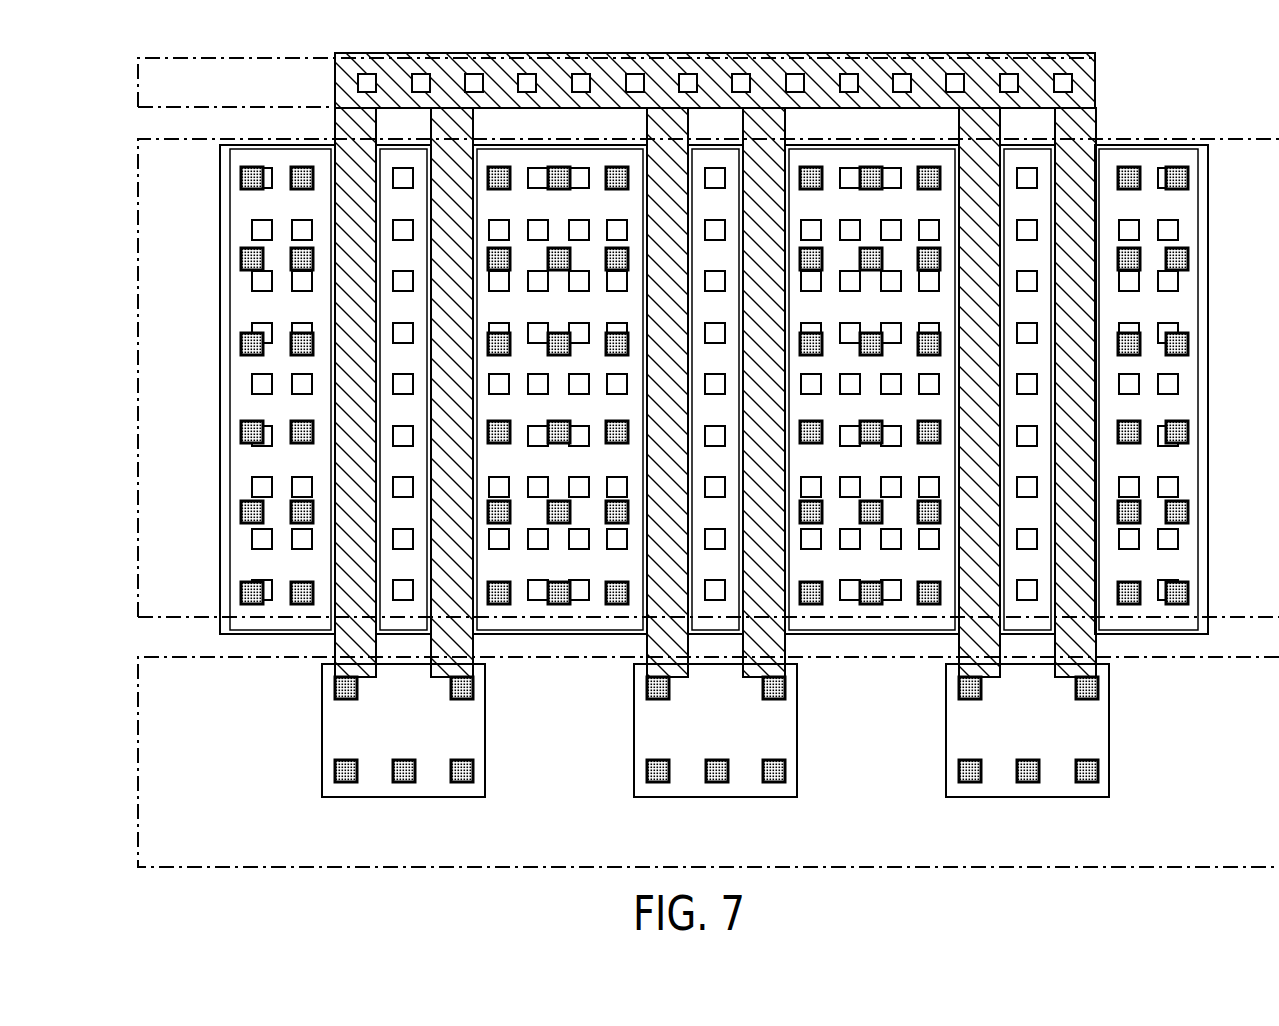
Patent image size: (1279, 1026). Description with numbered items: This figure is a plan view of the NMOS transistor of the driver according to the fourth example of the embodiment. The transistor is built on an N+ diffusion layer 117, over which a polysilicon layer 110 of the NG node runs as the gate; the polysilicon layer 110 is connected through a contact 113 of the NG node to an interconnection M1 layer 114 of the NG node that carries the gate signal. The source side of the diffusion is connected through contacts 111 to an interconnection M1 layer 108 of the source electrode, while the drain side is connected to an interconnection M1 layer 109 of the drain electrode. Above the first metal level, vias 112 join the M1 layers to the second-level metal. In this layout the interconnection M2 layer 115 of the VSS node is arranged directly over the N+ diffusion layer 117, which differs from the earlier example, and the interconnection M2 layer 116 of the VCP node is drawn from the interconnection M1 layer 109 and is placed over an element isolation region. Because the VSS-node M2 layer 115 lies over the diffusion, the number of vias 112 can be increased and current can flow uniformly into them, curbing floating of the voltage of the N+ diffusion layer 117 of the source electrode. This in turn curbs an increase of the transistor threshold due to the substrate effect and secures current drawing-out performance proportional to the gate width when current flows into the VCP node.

The interconnection M1 layer of a source electrode 108 is at (273, 625).
The interconnection M1 layer of a drain electrode 109 is at (485, 778).
The polysilicon layer of the NG node 110 is at (1097, 110).
The contact 111 is at (541, 168).
The via 112 is at (808, 172).
The contact of the NG node 113 is at (368, 74).
The interconnection M1 layer of the NG node 114 is at (172, 58).
The interconnection M2 layer of the VSS node 115 is at (1177, 138).
The interconnection M2 layer of the VCP node 116 is at (150, 657).
The N+ diffusion layer 117 is at (222, 637).